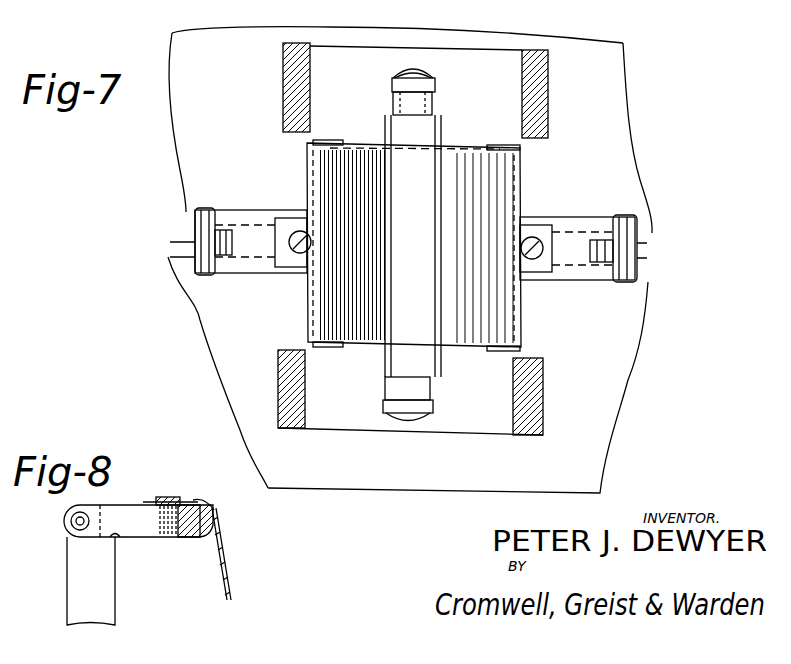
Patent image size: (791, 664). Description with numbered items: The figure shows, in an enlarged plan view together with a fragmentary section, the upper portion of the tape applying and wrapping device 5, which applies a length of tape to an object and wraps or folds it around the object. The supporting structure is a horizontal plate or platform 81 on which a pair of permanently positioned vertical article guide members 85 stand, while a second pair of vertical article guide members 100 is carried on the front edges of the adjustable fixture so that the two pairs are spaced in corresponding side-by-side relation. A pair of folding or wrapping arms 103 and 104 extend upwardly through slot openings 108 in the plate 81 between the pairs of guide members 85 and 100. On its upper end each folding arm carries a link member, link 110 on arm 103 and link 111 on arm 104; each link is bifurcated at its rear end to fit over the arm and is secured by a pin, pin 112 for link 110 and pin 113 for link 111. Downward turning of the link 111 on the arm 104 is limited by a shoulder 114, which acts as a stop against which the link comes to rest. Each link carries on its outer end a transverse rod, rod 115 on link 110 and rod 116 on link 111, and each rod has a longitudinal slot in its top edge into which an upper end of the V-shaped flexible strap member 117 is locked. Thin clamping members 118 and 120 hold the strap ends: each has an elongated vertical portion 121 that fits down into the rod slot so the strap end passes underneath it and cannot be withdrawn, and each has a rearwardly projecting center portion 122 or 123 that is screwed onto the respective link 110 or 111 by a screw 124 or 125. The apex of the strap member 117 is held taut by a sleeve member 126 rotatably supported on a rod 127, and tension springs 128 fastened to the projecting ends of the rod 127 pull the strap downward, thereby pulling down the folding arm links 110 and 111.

In FIG. 7, the tape applying and wrapping device 5 is at (653, 133).
In FIG. 7, the horizontal plate or platform 81 is at (633, 365).
In FIG. 7, the article guide members 85 is at (548, 80).
In FIG. 7, the article guide members 100 is at (283, 85).
In FIG. 7, the folding arm 103 is at (640, 254).
In FIG. 7, the folding arm 104 is at (190, 246).
In FIG. 8, the folding arm 104 is at (117, 587).
In FIG. 7, the slot openings 108 is at (195, 222).
In FIG. 7, the link member 110 is at (570, 222).
In FIG. 7, the link member 111 is at (238, 215).
In FIG. 8, the link member 111 is at (117, 507).
In FIG. 7, the pin 112 is at (620, 217).
In FIG. 7, the pin 113 is at (195, 212).
In FIG. 8, the pin 113 is at (70, 521).
In FIG. 8, the shoulder 114 is at (118, 538).
In FIG. 7, the transverse rod 115 is at (487, 350).
In FIG. 7, the transverse rod 116 is at (321, 347).
In FIG. 8, the transverse rod 116 is at (200, 538).
In FIG. 7, the V-shaped flexible strap member 117 is at (472, 140).
In FIG. 8, the V-shaped flexible strap member 117 is at (226, 566).
In FIG. 7, the clamping member 118 is at (515, 174).
In FIG. 7, the clamping member 120 is at (312, 166).
In FIG. 8, the clamping member 120 is at (195, 503).
In FIG. 8, the longitudinal portion 121 is at (213, 512).
In FIG. 7, the center portion 122 is at (543, 285).
In FIG. 7, the center portion 123 is at (290, 273).
In FIG. 7, the screw 124 is at (543, 248).
In FIG. 7, the screw 125 is at (289, 243).
In FIG. 8, the screw 125 is at (185, 478).
In FIG. 7, the sleeve member 126 is at (440, 120).
In FIG. 7, the rod 127 is at (432, 104).
In FIG. 7, the tension springs 128 is at (425, 64).